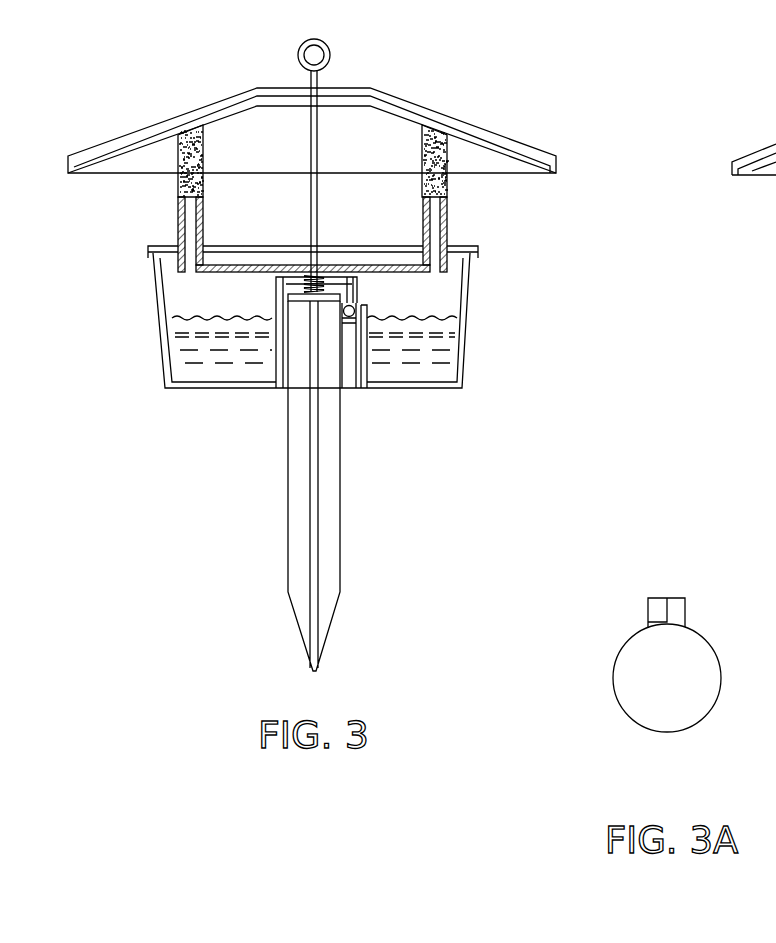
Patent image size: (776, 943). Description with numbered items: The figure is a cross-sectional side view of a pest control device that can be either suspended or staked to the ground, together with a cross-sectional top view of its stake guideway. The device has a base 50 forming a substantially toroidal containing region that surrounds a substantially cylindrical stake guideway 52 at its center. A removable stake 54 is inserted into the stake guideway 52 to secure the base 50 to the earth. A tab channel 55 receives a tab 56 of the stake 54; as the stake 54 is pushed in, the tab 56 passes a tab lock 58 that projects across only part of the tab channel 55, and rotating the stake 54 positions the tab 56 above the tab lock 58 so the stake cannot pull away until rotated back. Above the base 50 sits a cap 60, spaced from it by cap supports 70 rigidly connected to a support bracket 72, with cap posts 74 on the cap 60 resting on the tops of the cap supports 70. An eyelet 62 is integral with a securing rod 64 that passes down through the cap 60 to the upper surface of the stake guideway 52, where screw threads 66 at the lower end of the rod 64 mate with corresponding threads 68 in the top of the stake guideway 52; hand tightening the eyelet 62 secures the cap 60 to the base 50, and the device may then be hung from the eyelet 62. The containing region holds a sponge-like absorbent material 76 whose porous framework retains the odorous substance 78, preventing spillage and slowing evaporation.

In FIG. 3, the base 50 is at (470, 298).
In FIG. 3, the stake guideway 52 is at (285, 390).
In FIG. 3A, the stake guideway 52 is at (635, 693).
In FIG. 3, the stake 54 is at (333, 472).
In FIG. 3, the tab channel 55 is at (355, 390).
In FIG. 3A, the tab channel 55 is at (673, 605).
In FIG. 3, the tab 56 is at (355, 312).
In FIG. 3, the tab lock 58 is at (367, 320).
In FIG. 3A, the tab lock 58 is at (657, 603).
In FIG. 3, the cap 60 is at (484, 124).
In FIG. 3, the eyelet 62 is at (331, 54).
In FIG. 3, the securing rod 64 is at (319, 222).
In FIG. 3, the screw threads 66 is at (288, 292).
In FIG. 3, the threads 68 is at (358, 284).
In FIG. 3, the cap supports 70 is at (204, 220).
In FIG. 3, the support bracket 72 is at (238, 265).
In FIG. 3, the cap posts 74 is at (204, 147).
In FIG. 3, the absorbent material 76 is at (435, 357).
In FIG. 3, the odorous substance 78 is at (165, 318).